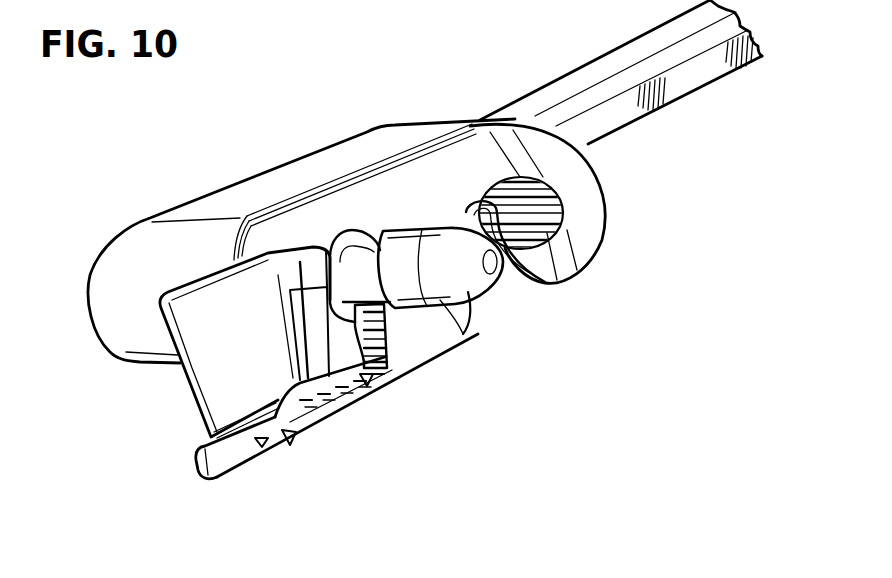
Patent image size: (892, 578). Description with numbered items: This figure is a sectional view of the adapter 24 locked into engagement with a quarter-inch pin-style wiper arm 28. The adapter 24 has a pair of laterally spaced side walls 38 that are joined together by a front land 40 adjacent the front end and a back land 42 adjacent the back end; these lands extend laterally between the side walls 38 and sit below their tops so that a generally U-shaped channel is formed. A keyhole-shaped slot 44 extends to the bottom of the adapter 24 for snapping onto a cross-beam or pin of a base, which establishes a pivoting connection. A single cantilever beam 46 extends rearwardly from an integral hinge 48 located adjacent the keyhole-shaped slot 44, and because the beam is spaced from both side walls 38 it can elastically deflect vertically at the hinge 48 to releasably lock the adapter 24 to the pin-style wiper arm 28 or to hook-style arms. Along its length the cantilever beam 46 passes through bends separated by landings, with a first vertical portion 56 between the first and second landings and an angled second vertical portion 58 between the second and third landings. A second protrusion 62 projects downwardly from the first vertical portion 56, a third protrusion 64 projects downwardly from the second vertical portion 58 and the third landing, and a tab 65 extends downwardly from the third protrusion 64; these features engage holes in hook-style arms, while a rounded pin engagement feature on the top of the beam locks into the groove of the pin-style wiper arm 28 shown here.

The adapter 24 is at (187, 399).
The pin-style wiper arm 28 is at (587, 78).
The side walls 38 is at (202, 322).
The front land 40 is at (548, 197).
The back land 42 is at (248, 276).
The keyhole-shaped slot 44 is at (507, 288).
The cantilever beam 46 is at (191, 475).
The integral hinge 48 is at (458, 212).
The first vertical portion 56 is at (385, 337).
The second vertical portion 58 is at (307, 382).
The second protrusion 62 is at (377, 375).
The third protrusion 64 is at (268, 444).
The tab 65 is at (291, 433).